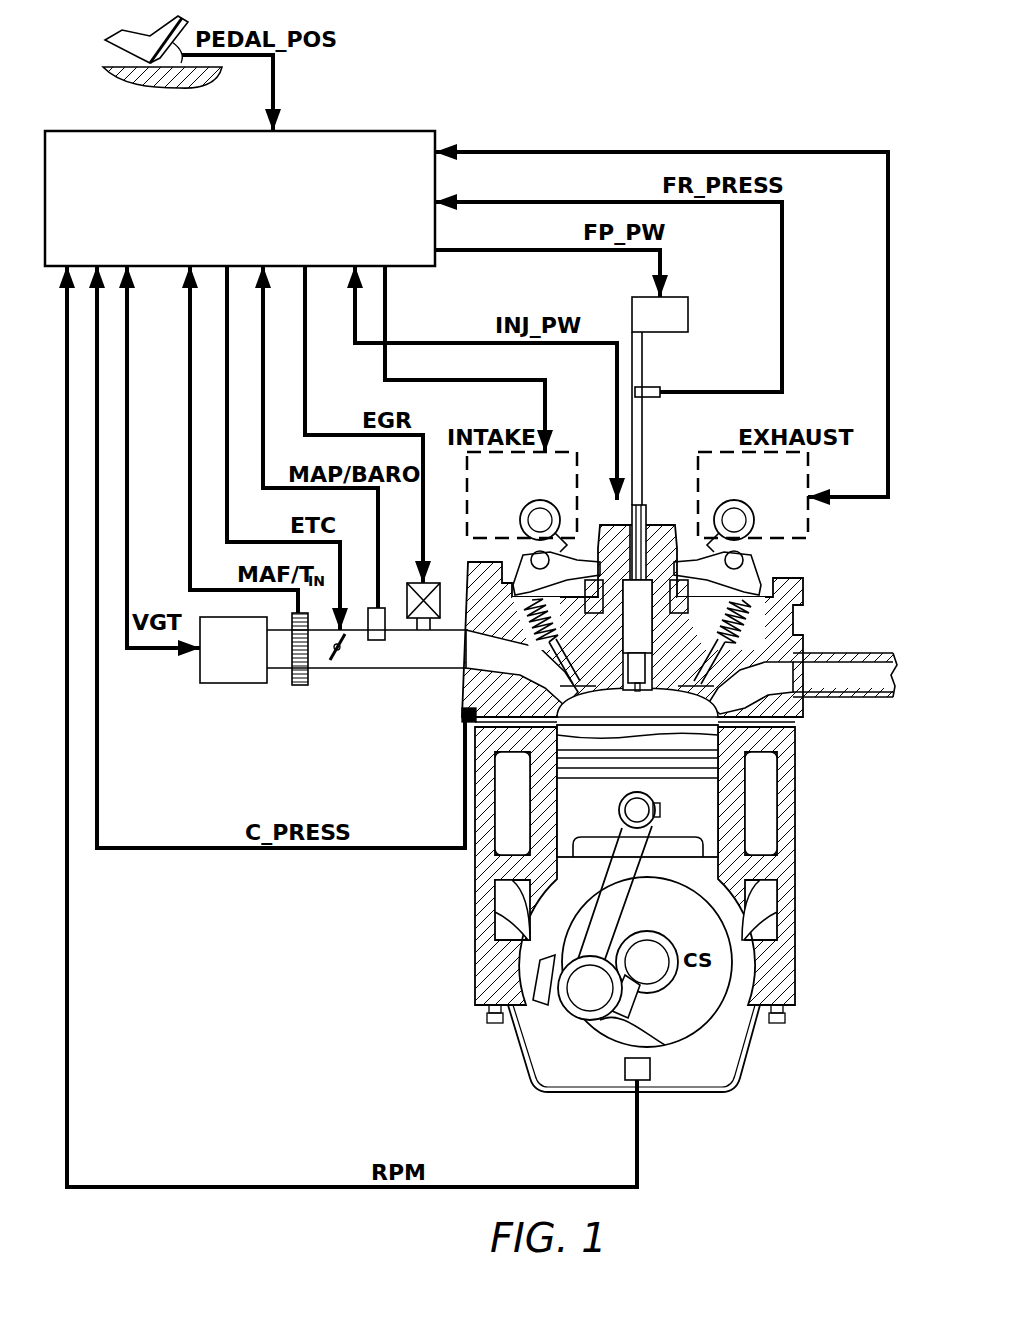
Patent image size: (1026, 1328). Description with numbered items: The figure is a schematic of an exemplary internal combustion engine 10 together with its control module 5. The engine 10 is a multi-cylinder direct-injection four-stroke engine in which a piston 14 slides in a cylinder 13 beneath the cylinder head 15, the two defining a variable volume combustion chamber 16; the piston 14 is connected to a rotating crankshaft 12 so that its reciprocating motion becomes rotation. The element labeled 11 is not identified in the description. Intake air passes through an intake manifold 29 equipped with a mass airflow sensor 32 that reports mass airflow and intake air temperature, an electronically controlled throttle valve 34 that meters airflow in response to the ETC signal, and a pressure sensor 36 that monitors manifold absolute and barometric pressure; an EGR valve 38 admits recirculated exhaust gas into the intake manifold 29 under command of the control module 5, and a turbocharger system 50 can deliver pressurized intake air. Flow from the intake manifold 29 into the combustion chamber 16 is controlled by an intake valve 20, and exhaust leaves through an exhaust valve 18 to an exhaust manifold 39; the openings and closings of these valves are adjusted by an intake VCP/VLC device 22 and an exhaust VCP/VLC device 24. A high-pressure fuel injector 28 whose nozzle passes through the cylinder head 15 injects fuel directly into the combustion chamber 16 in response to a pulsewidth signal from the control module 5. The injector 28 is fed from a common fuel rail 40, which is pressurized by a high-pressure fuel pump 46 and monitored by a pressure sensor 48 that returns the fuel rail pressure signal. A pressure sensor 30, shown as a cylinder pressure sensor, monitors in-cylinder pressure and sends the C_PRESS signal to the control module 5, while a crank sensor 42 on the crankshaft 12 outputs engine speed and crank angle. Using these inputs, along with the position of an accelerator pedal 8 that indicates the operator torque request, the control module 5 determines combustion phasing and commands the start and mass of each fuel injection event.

The control module 5 is at (390, 142).
The accelerator pedal 8 is at (150, 72).
The internal combustion engine 10 is at (728, 1128).
The engine block 11 is at (775, 866).
The crankshaft 12 is at (695, 1022).
The cylinder 13 is at (722, 738).
The piston 14 is at (703, 822).
The cylinder head 15 is at (800, 591).
The combustion chamber 16 is at (613, 727).
The exhaust valve 18 is at (705, 698).
The intake valve 20 is at (565, 673).
The intake variable cam phasing/variable lift control device 22 is at (572, 450).
The exhaust variable cam phasing/variable lift control device 24 is at (800, 517).
The fuel injector 28 is at (642, 506).
The intake manifold 29 is at (455, 645).
The pressure sensor 30 is at (462, 722).
The mass airflow sensor 32 is at (300, 685).
The throttle valve 34 is at (337, 662).
The pressure sensor 36 is at (376, 641).
The exhaust gas recirculation valve 38 is at (416, 619).
The exhaust manifold 39 is at (783, 668).
The fuel rail 40 is at (643, 365).
The crank sensor 42 is at (625, 1076).
The fuel pump 46 is at (688, 316).
The pressure sensor 48 is at (660, 388).
The turbocharger system 50 is at (212, 683).